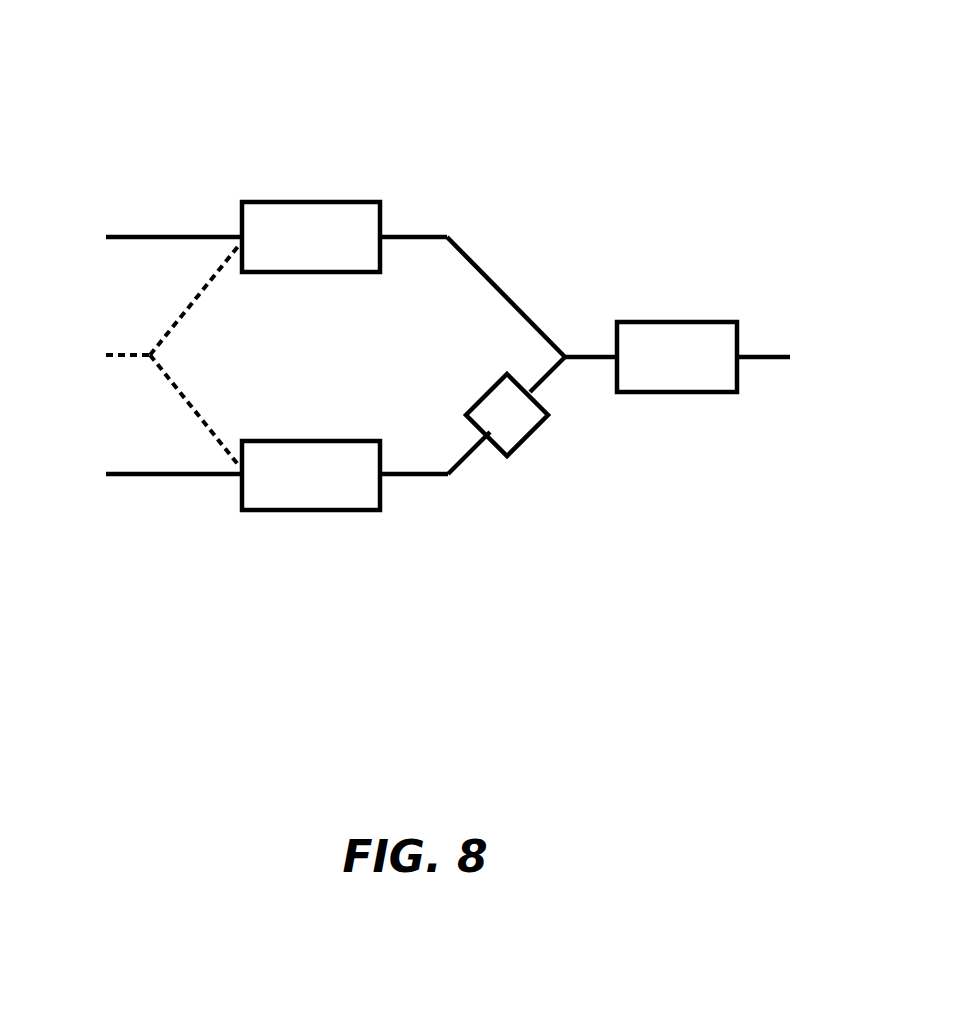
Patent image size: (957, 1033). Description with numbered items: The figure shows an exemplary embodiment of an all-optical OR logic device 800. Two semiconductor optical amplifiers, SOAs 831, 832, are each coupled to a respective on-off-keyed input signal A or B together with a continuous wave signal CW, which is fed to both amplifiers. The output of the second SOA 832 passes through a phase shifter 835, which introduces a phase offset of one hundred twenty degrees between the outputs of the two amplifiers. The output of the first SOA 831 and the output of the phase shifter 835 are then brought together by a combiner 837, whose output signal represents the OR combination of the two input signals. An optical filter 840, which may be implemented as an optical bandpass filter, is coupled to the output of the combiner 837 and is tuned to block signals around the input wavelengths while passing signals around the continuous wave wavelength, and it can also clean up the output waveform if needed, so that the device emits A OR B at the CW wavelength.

The OR logic device 800 is at (432, 32).
The SOA 831 is at (310, 202).
The SOA 832 is at (310, 510).
The phase shifter 835 is at (525, 435).
The combiner 837 is at (565, 357).
The optical filter 840 is at (680, 322).